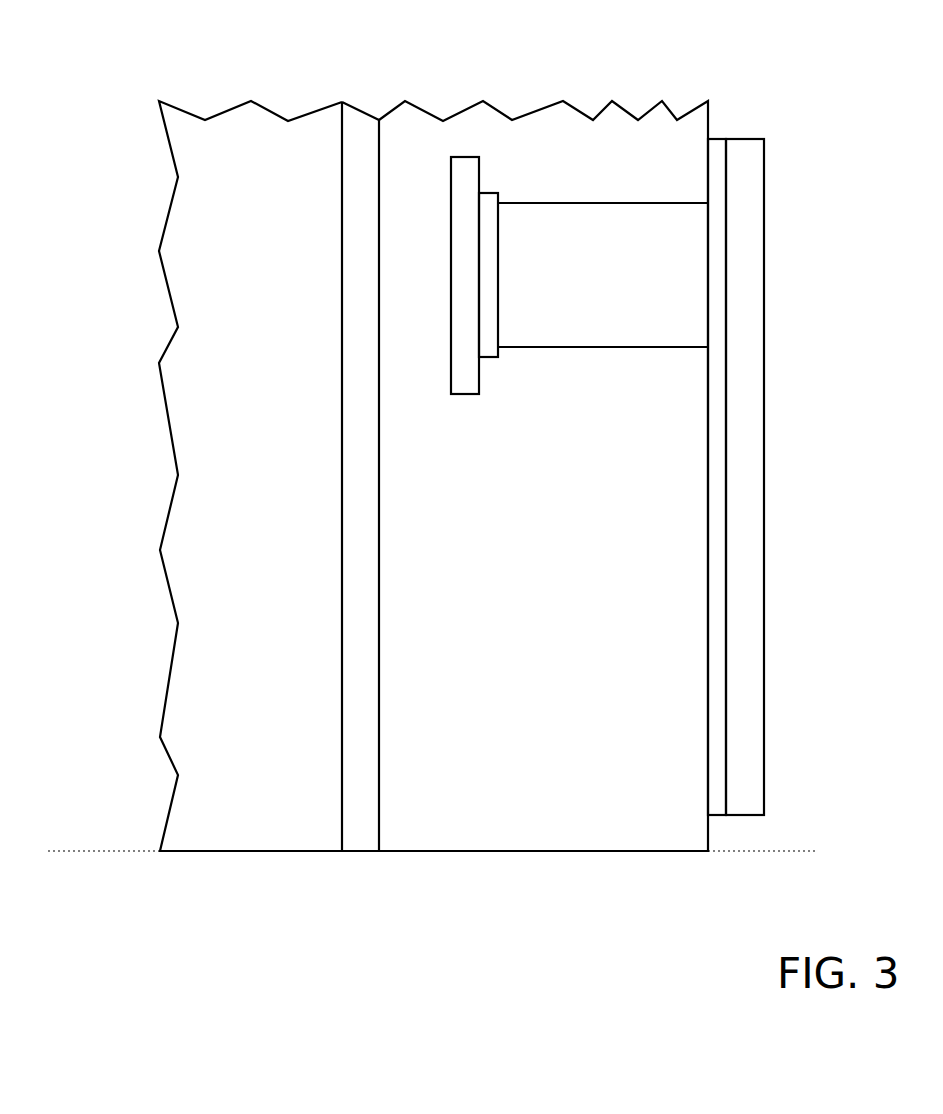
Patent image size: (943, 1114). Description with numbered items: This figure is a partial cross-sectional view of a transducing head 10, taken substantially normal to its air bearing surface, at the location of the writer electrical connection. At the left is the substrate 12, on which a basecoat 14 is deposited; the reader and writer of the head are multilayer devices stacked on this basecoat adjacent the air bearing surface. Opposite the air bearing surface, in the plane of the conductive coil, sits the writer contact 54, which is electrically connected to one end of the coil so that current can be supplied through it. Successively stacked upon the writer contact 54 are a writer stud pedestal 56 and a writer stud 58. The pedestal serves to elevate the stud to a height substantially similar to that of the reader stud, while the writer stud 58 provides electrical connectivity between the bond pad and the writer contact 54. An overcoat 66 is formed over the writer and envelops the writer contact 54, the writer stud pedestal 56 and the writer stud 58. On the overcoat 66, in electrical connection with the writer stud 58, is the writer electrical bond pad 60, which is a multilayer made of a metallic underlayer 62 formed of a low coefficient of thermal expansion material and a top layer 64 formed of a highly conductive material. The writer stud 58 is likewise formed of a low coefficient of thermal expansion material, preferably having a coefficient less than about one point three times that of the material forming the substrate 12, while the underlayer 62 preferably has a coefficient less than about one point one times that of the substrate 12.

The transducing head 10 is at (822, 73).
The substrate 12 is at (233, 758).
The basecoat 14 is at (362, 786).
The writer contact 54 is at (462, 165).
The writer stud pedestal 56 is at (487, 239).
The writer stud 58 is at (575, 217).
The writer electrical bond pad 60 is at (781, 434).
The metallic underlayer 62 is at (718, 272).
The top layer 64 is at (743, 340).
The overcoat 66 is at (653, 760).